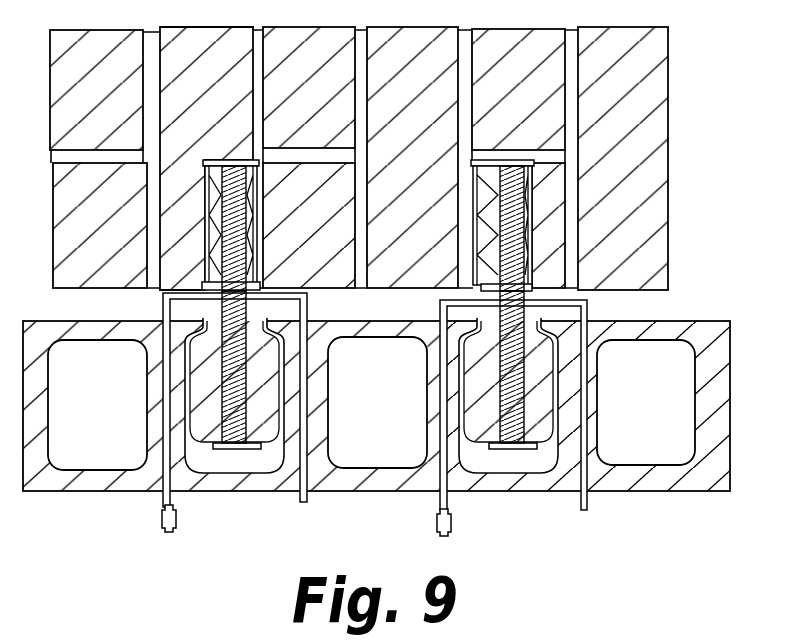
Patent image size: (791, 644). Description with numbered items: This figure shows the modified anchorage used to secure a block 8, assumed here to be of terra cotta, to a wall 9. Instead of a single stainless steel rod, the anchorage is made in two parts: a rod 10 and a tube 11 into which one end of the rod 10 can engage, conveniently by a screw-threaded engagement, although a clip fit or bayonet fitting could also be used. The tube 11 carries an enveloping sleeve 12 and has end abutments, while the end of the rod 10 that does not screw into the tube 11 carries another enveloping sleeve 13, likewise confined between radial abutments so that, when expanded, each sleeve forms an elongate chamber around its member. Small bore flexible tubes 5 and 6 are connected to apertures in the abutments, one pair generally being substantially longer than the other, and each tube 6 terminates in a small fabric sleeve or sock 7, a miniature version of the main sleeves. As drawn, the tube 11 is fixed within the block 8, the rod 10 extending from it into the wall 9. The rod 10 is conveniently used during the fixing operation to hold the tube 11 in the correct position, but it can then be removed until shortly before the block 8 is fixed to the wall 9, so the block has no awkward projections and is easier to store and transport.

The small bore flexible tube 5 is at (592, 502).
The small bore flexible tube 6 is at (155, 478).
The fabric sock 7 is at (177, 519).
The block 8 is at (708, 472).
The wall 9 is at (655, 133).
The rod 10 is at (240, 231).
The tube 11 is at (223, 392).
The enveloping sleeve 12 is at (270, 472).
The enveloping sleeve 13 is at (217, 230).